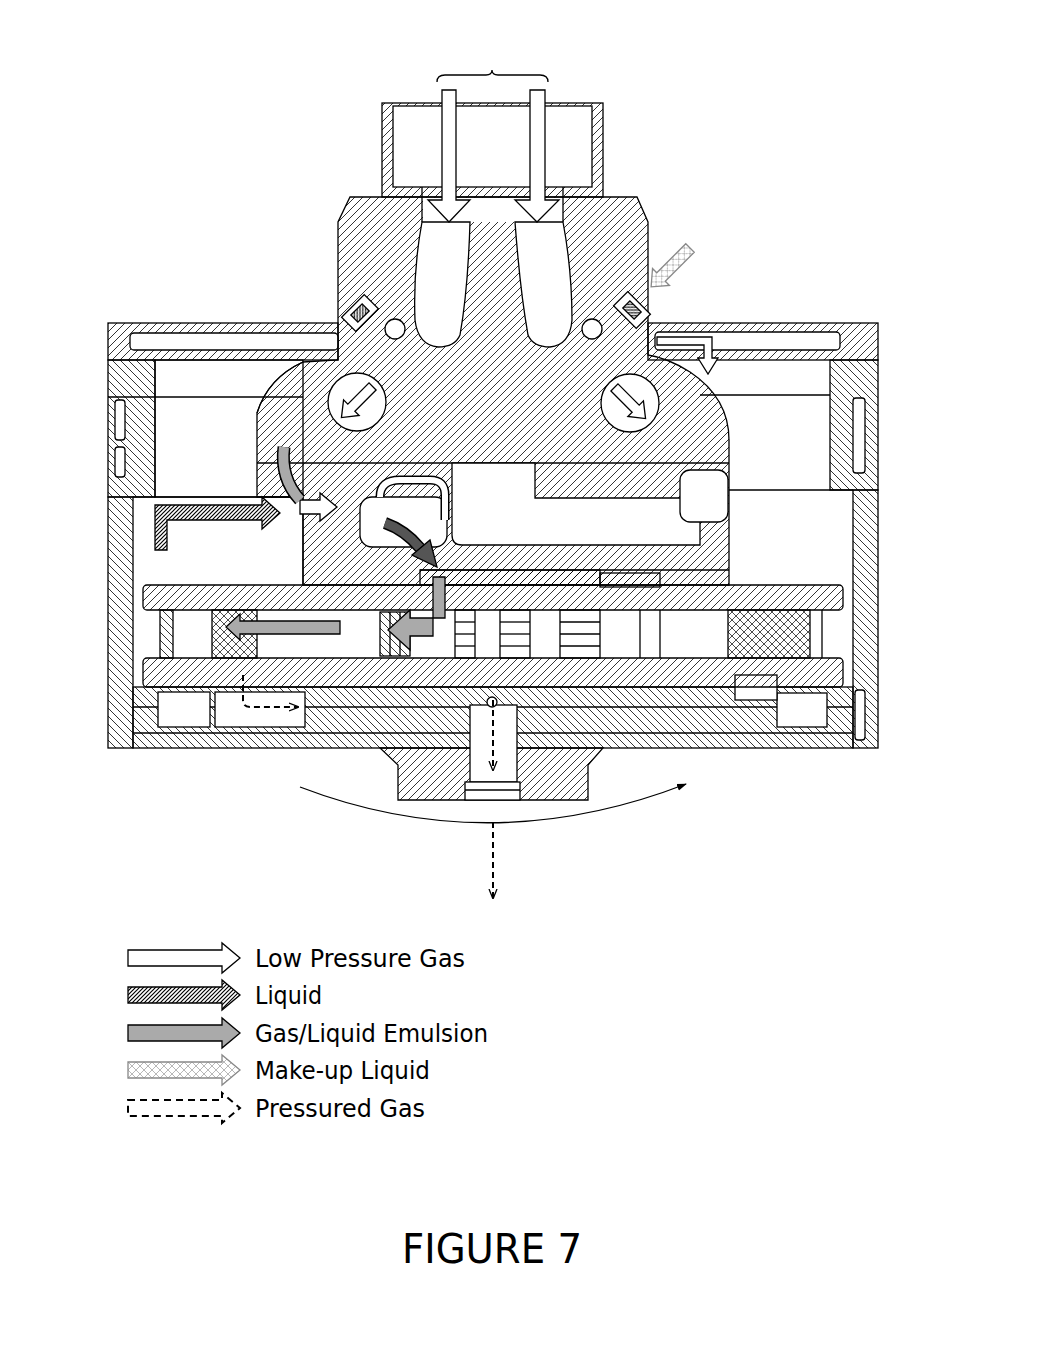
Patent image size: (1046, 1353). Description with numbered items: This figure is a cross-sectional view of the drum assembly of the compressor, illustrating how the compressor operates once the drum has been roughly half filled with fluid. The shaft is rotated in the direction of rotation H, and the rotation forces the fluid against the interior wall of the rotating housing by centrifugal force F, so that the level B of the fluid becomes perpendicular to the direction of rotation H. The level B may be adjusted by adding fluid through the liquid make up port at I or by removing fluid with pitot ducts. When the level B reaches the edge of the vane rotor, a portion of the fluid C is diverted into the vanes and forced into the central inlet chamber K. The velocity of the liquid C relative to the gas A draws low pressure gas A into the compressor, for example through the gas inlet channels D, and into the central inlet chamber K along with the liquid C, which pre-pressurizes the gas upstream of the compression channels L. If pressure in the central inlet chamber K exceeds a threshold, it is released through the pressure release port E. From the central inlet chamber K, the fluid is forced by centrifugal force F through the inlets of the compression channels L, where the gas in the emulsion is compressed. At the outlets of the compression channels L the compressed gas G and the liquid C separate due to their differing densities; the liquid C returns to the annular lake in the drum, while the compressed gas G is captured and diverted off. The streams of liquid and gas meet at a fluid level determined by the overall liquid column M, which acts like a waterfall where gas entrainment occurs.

The low pressure gas A is at (410, 490).
The level of the fluid B is at (297, 417).
The liquid/fluid C is at (383, 535).
The gas inlet channels D is at (412, 275).
The pressure release port E is at (343, 300).
The centrifugal force F is at (195, 430).
The compressed gas G is at (267, 712).
The direction of rotation H is at (567, 837).
The liquid make up port location I is at (650, 310).
The central inlet chamber K is at (520, 588).
The compression channels L is at (407, 640).
The liquid column M is at (210, 642).